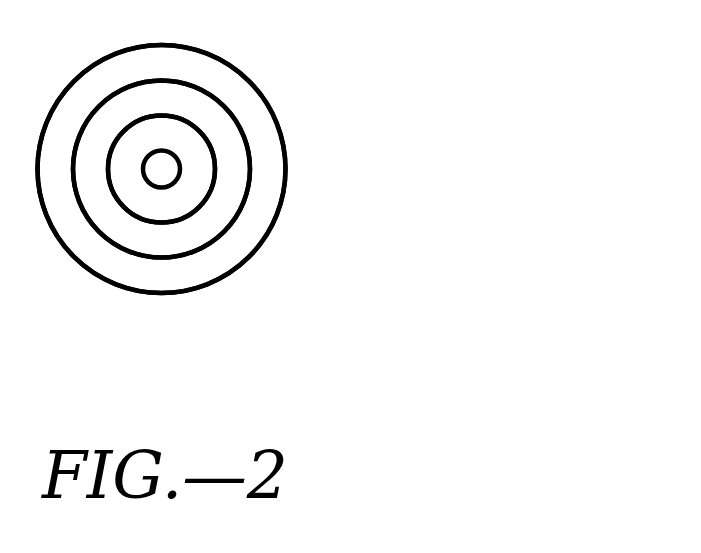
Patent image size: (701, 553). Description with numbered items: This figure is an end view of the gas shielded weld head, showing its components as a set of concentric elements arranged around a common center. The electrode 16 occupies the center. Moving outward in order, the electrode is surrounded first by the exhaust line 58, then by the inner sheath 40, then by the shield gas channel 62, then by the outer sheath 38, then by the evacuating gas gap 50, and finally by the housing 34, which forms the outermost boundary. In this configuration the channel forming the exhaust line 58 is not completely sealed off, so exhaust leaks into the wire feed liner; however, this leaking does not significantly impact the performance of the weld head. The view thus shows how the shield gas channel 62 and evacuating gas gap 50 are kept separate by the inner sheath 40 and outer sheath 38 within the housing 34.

The electrode 16 is at (162, 169).
The exhaust line 58 is at (193, 168).
The inner sheath 40 is at (214, 146).
The shield gas channel 62 is at (233, 171).
The outer sheath 38 is at (240, 208).
The evacuating gas gap 50 is at (243, 232).
The housing 34 is at (232, 272).